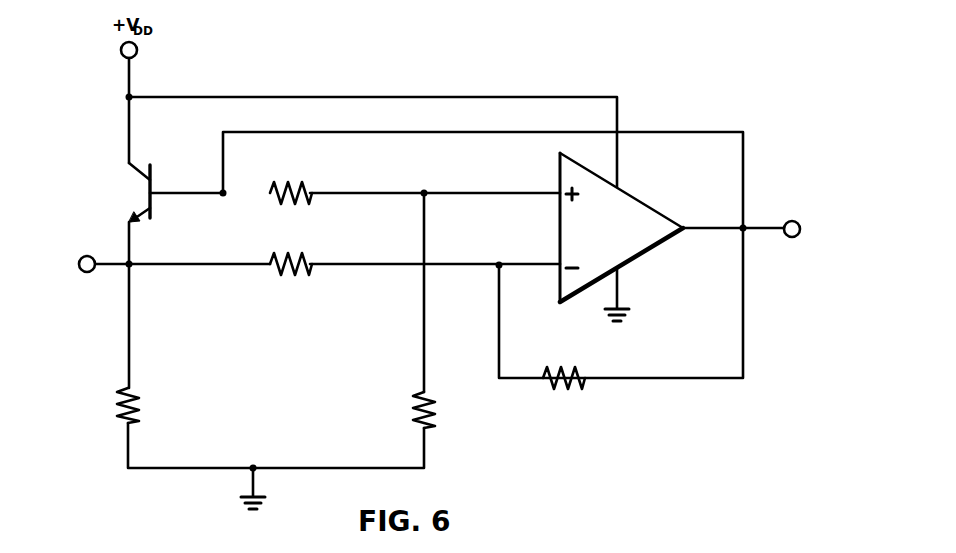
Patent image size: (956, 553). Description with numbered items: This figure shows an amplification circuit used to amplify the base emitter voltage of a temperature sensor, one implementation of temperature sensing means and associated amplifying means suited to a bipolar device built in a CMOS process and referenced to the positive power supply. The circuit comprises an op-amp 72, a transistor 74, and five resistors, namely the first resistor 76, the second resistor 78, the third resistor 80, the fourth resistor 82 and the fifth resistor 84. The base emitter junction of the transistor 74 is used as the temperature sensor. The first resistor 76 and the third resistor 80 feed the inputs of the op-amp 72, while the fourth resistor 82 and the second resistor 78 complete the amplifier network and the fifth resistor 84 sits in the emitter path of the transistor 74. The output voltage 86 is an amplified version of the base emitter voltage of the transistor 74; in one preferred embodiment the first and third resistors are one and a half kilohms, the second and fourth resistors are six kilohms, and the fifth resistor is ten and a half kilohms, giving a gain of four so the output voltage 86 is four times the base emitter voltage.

The op-amp 72 is at (622, 210).
The transistor 74 is at (129, 166).
The resistor R1 76 is at (311, 263).
The resistor R2 78 is at (413, 409).
The resistor R3 80 is at (311, 190).
The resistor R4 82 is at (562, 370).
The resistor R5 84 is at (128, 392).
The output voltage 86 is at (790, 221).